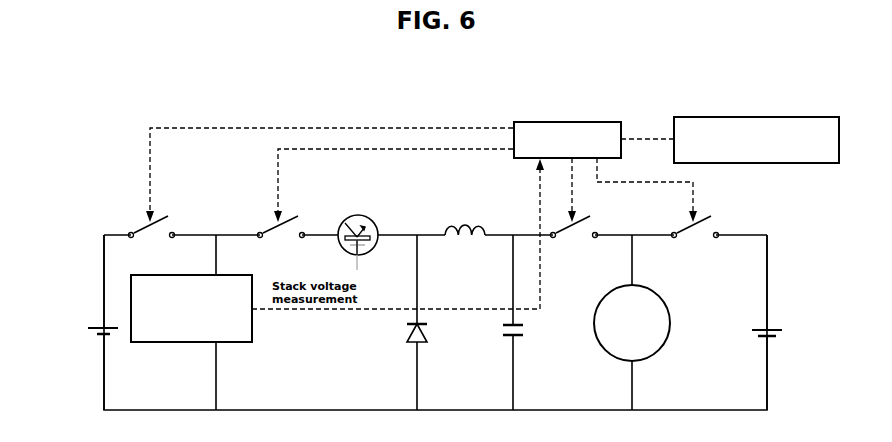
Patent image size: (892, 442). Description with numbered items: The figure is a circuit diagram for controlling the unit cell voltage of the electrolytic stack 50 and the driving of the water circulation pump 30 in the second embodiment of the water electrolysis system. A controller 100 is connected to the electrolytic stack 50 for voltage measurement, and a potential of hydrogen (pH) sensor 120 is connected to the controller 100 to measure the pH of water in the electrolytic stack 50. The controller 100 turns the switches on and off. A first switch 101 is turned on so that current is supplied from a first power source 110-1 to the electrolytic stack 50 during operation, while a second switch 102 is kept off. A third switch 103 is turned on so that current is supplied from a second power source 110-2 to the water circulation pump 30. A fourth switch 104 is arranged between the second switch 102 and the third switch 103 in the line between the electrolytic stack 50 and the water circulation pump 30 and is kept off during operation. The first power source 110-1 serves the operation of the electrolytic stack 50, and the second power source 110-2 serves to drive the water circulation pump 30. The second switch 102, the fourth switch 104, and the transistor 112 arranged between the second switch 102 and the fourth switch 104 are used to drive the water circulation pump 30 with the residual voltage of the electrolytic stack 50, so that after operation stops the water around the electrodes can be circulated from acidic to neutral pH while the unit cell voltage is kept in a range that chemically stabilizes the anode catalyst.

The controller 100 is at (563, 122).
The potential of hydrogen (pH) sensor 120 is at (747, 117).
The first switch 101 is at (144, 224).
The second switch 102 is at (272, 224).
The third switch 103 is at (708, 216).
The fourth switch 104 is at (574, 222).
The transistor 112 is at (365, 215).
The first power source 110-1 is at (90, 327).
The second power source 110-2 is at (781, 328).
The electrolytic stack 50 is at (252, 336).
The water circulation pump 30 is at (670, 312).